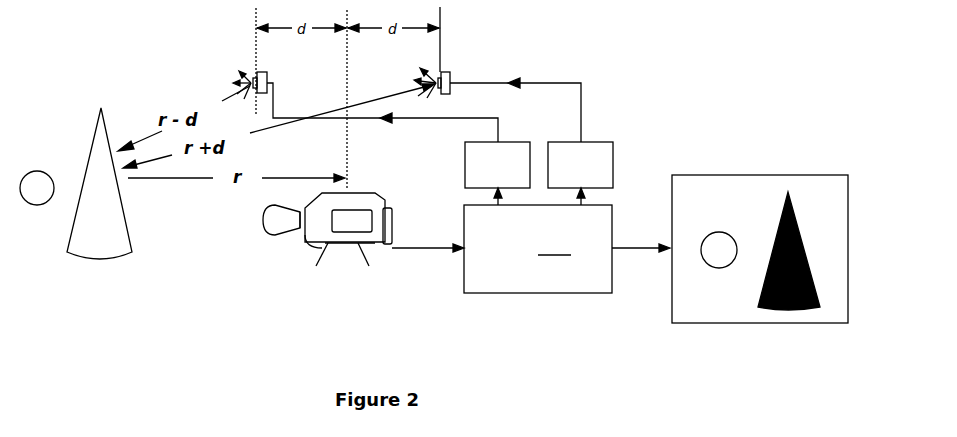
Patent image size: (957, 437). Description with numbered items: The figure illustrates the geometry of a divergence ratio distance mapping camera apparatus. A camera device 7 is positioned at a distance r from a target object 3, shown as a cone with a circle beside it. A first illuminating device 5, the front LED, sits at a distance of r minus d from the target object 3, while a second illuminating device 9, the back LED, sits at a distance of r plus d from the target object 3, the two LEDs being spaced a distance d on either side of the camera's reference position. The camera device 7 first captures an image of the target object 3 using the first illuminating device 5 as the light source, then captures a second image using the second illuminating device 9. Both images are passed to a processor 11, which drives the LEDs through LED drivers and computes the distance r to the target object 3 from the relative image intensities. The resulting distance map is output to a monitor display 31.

The target object 3 is at (96, 122).
The first illuminating device 5 is at (228, 55).
The second illuminating device 9 is at (468, 40).
The camera device 7 is at (300, 258).
The processor 11 is at (475, 293).
The monitor display 31 is at (858, 243).